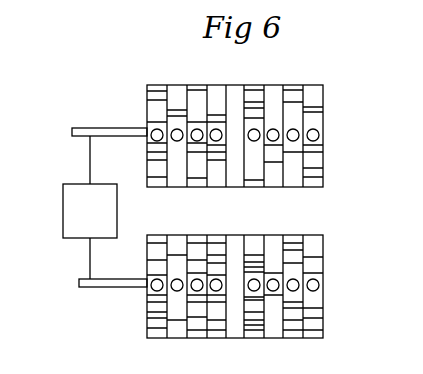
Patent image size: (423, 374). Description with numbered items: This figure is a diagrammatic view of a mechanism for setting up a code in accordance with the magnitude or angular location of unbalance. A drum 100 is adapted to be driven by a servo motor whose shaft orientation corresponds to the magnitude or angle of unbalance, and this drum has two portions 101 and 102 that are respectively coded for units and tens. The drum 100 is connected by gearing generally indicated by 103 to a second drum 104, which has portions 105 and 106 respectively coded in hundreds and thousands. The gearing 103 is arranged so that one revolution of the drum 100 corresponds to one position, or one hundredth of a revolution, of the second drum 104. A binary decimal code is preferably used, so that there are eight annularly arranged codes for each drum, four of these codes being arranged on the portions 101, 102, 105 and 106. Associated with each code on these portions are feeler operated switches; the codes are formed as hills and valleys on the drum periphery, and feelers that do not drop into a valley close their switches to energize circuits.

The drum 100 is at (256, 304).
The drum portion 101 is at (287, 335).
The drum portion 102 is at (194, 335).
The gearing 103 is at (70, 208).
The second drum 104 is at (222, 121).
The drum portion 105 is at (278, 85).
The drum portion 106 is at (214, 58).